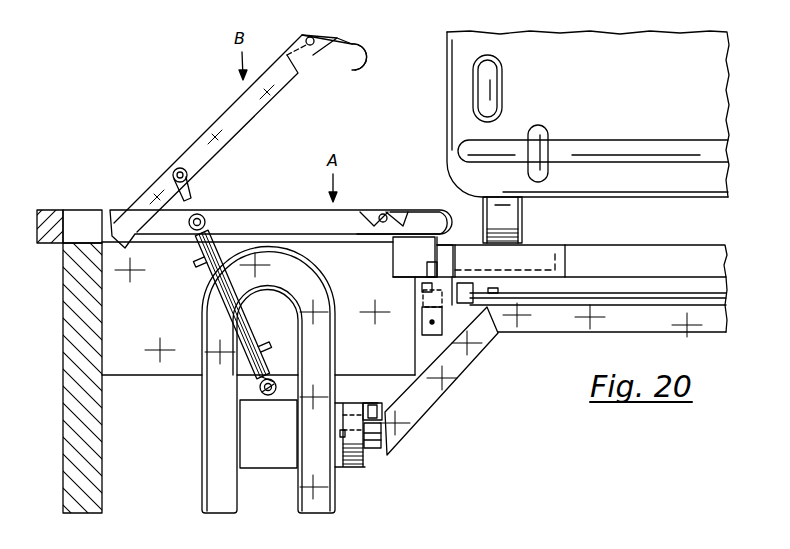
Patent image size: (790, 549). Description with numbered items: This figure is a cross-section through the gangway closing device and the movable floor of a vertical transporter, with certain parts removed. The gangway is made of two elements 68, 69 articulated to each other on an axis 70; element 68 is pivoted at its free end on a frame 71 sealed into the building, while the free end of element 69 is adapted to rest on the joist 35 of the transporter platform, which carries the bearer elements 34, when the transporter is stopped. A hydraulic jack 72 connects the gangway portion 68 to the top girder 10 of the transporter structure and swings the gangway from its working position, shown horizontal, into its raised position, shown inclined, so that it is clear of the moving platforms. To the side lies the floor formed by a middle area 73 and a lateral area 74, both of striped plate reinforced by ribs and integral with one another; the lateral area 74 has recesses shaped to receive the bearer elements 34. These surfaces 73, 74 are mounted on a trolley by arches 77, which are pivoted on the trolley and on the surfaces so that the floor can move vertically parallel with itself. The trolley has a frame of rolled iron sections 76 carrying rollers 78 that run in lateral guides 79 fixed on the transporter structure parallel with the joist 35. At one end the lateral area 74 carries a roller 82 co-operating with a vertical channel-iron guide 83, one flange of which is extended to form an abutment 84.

The top girder 10 is at (268, 434).
The bearer element 34 is at (448, 246).
The joist 35 is at (400, 258).
The gangway element 68 is at (298, 211).
The gangway element 69 is at (428, 211).
The axis 70 is at (384, 214).
The frame 71 is at (83, 222).
The hydraulic jack 72 is at (250, 340).
The middle area 73 is at (614, 246).
The lateral area 74 is at (537, 245).
The rolled iron sections 76 is at (372, 448).
The arches 77 is at (610, 327).
The rollers 78 is at (352, 468).
The lateral guides 79 is at (347, 403).
The roller 82 is at (422, 290).
The guide 83 is at (422, 330).
The abutment 84 is at (433, 323).